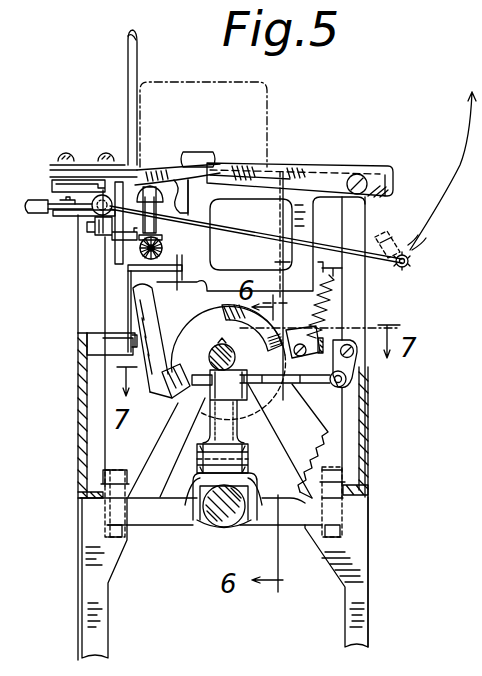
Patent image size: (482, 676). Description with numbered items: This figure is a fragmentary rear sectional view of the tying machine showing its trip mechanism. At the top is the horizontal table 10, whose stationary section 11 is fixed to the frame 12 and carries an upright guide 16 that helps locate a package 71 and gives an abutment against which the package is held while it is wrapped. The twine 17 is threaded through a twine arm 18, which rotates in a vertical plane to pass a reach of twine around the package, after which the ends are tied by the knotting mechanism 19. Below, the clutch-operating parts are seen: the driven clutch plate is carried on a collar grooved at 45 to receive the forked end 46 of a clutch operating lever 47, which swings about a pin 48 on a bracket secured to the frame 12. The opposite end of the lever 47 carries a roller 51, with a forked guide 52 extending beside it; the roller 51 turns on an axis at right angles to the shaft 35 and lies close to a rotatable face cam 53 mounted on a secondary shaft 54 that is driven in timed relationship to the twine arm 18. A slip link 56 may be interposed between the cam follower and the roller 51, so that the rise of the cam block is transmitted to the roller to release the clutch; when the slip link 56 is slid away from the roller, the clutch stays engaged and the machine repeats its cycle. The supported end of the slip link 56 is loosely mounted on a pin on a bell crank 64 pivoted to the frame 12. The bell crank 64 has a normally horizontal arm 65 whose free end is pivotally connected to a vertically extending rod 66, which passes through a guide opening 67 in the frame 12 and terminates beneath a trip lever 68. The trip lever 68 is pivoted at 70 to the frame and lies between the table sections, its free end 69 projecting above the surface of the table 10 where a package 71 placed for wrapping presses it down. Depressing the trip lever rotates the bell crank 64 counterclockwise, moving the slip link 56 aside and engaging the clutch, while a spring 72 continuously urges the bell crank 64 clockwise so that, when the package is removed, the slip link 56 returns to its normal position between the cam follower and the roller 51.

The horizontal table 10 is at (379, 160).
The stationary section 11 is at (170, 167).
The frame 12 is at (368, 536).
The upright guide 16 is at (128, 60).
The twine 17 is at (250, 220).
The twine arm 18 is at (408, 263).
The knotting mechanism 19 is at (105, 243).
The shaft 35 is at (220, 527).
The groove 45 is at (214, 530).
The forked end 46 is at (207, 523).
The clutch operating lever 47 is at (213, 439).
The pin 48 is at (197, 462).
The roller 51 is at (178, 403).
The forked guide 52 is at (288, 441).
The face cam 53 is at (190, 325).
The secondary shaft 54 is at (215, 350).
The slip link 56 is at (250, 392).
The bell crank 64 is at (356, 379).
The arm 65 is at (333, 327).
The rod 66 is at (306, 290).
The guide opening 67 is at (280, 263).
The trip lever 68 is at (274, 159).
The free end 69 is at (200, 153).
The pivot 70 is at (392, 195).
The package 71 is at (270, 100).
The spring 72 is at (333, 299).